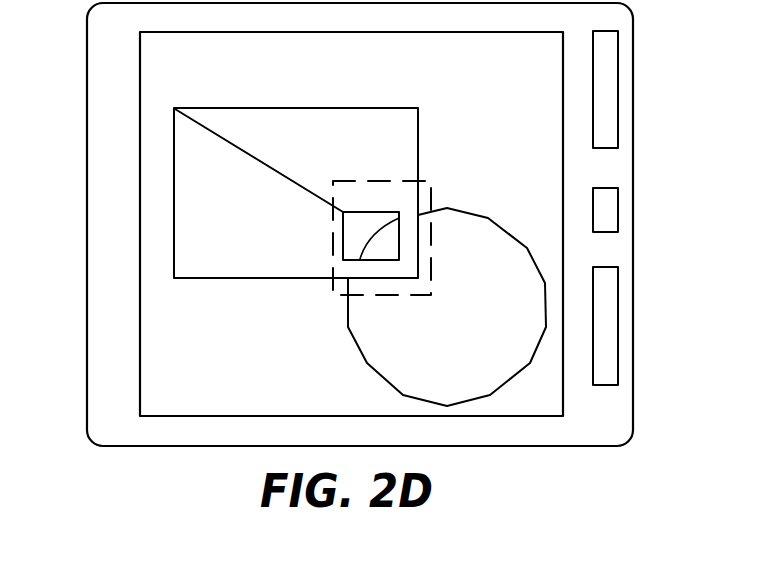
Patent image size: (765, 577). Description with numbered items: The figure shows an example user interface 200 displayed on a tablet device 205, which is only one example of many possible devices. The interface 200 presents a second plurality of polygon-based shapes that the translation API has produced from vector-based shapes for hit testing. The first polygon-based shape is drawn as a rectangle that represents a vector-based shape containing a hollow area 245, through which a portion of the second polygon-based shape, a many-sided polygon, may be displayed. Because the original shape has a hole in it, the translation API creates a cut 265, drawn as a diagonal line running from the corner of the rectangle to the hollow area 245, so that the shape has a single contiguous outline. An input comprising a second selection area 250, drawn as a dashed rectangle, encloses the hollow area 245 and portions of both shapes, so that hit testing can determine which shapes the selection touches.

The tablet device 205 is at (106, 116).
The user interface 200 is at (339, 62).
The second selection area 250 is at (400, 180).
The hollow area 245 is at (342, 237).
The cut 265 is at (244, 155).